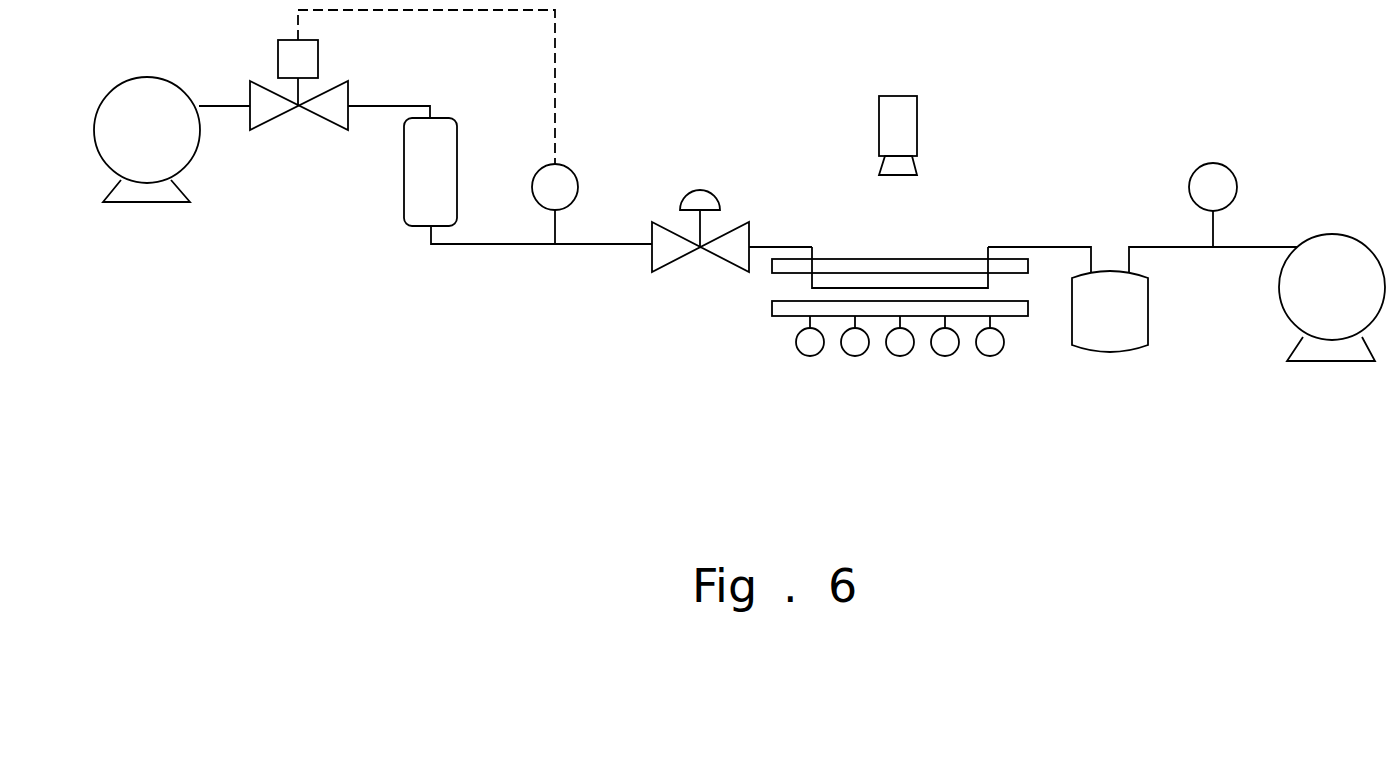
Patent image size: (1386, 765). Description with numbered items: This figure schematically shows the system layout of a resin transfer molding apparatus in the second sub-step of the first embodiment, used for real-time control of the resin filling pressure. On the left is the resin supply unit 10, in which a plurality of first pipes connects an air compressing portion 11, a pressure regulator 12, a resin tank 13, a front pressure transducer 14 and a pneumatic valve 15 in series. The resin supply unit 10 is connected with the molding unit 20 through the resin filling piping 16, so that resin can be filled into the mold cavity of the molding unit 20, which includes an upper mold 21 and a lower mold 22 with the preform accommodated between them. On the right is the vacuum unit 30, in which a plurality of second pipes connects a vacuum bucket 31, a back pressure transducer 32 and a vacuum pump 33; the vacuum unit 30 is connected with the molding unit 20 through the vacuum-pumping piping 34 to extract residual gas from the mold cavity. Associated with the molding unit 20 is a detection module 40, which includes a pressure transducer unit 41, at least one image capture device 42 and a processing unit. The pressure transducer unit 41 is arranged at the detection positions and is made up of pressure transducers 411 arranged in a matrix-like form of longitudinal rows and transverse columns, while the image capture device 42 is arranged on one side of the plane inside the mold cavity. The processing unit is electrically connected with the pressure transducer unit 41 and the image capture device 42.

The resin supply unit 10 is at (762, 327).
The air compressing portion 11 is at (148, 218).
The pressure regulator 12 is at (298, 128).
The resin tank 13 is at (419, 232).
The front pressure transducer 14 is at (543, 215).
The pneumatic valve 15 is at (697, 260).
The resin filling piping 16 is at (772, 250).
The molding unit 20 is at (937, 182).
The upper mold 21 is at (946, 263).
The lower mold 22 is at (1008, 312).
The vacuum unit 30 is at (1355, 460).
The vacuum bucket 31 is at (1109, 358).
The back pressure transducer 32 is at (1203, 215).
The vacuum pump 33 is at (1328, 368).
The vacuum-pumping piping 34 is at (1052, 260).
The detection module 40 is at (977, 457).
The pressure transducer unit 41 is at (1020, 408).
The pressure transducers 411 is at (945, 356).
The image capture device 42 is at (888, 170).